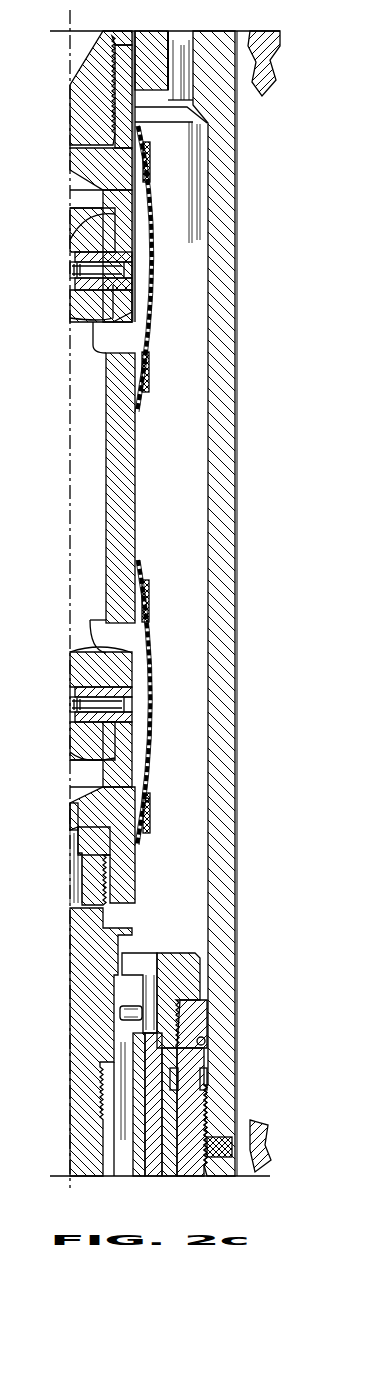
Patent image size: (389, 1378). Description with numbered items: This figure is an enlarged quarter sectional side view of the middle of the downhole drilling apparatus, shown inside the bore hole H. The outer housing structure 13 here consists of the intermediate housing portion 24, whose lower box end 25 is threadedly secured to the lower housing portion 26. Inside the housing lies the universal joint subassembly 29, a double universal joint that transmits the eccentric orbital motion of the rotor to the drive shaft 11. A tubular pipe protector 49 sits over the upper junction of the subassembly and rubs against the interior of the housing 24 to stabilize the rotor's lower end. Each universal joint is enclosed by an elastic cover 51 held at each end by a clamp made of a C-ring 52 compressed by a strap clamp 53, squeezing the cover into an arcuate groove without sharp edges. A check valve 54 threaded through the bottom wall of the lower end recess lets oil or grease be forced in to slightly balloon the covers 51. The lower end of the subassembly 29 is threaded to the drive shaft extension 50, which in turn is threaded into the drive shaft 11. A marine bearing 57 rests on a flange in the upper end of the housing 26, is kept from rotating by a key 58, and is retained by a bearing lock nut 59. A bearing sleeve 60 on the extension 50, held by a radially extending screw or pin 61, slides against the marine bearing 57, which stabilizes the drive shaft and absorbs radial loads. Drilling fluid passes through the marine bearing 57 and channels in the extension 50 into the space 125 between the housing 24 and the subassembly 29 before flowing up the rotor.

The bore hole H is at (250, 60).
The tubular pipe protector 49 is at (147, 70).
The outer housing structure 13 is at (227, 553).
The intermediate housing portion 24 is at (227, 870).
The universal joint subassembly 29 is at (128, 528).
The space 125 is at (165, 469).
The elastic cover 51 is at (147, 313).
The C-ring 52 is at (150, 153).
The strap clamp 53 is at (149, 174).
The check valve 54 is at (72, 833).
The drive shaft extension 50 is at (72, 878).
The drive shaft 11 is at (72, 1140).
The bearing sleeve 60 is at (139, 1000).
The bearing lock nut 59 is at (185, 957).
The radially extending screw or pin 61 is at (120, 1014).
The key 58 is at (185, 1077).
The marine bearing 57 is at (167, 1113).
The lower housing portion 26 is at (220, 1177).
The lower box end 25 is at (236, 1128).